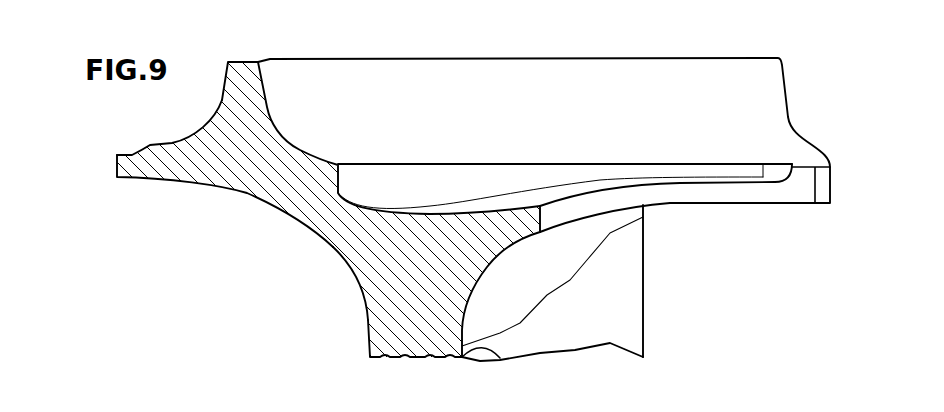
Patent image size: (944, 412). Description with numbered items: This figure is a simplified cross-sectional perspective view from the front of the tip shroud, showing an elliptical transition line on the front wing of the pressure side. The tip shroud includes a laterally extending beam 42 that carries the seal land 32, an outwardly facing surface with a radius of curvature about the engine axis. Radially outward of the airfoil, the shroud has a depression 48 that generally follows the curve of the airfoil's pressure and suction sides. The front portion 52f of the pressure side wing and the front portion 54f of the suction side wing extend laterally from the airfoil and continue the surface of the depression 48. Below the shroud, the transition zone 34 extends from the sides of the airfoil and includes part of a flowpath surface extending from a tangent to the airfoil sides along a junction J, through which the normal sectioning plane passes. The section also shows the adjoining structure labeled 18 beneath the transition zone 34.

The seal land 32 is at (377, 57).
The beam 42 is at (243, 153).
The front portion of suction side wing 54f is at (125, 157).
The depression 48 is at (450, 213).
The front portion of pressure side wing 52f is at (510, 228).
The transition zone 34 is at (533, 309).
The base / shaft 18 is at (397, 359).
The junction J is at (370, 334).